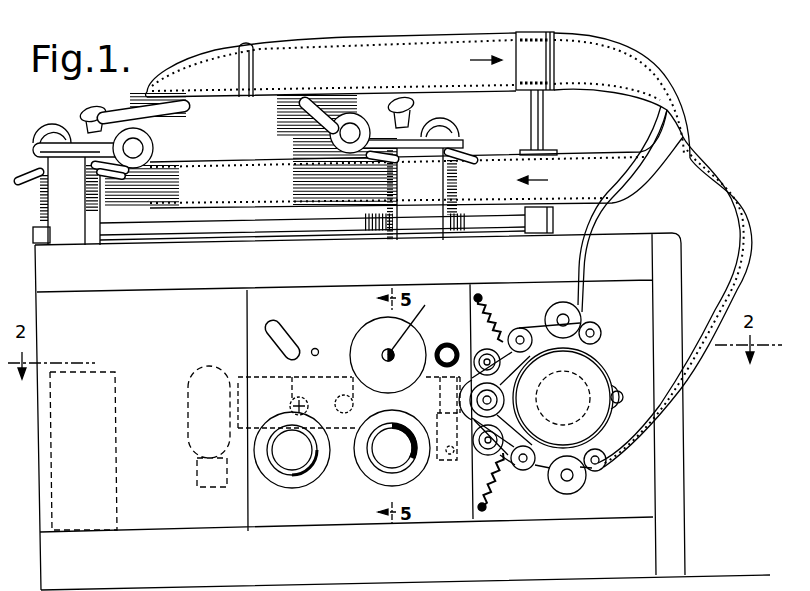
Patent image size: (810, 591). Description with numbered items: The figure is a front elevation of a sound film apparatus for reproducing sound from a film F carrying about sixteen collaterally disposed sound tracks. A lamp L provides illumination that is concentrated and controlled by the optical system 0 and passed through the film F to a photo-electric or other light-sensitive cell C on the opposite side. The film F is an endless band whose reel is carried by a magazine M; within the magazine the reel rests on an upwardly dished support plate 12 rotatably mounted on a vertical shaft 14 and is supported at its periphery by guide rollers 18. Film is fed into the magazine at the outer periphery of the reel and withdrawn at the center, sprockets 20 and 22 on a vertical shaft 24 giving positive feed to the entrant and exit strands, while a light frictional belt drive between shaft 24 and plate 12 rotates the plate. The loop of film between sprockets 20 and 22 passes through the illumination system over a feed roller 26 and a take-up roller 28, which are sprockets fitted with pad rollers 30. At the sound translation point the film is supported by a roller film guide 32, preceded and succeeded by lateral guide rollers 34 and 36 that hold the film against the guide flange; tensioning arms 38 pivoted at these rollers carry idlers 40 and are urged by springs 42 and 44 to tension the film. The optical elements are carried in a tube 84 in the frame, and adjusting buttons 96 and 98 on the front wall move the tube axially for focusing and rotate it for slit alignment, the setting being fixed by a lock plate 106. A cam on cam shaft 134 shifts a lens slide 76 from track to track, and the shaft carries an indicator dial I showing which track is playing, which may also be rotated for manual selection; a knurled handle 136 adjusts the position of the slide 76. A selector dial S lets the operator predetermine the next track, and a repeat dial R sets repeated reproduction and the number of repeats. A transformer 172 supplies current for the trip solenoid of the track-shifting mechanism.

The support plate 12 is at (266, 224).
The vertical shaft 14 is at (254, 49).
The guide rollers 18 is at (62, 121).
The sprocket 20 is at (556, 152).
The sprocket 22 is at (544, 33).
The vertical shaft 24 is at (537, 120).
The feed roller 26 is at (578, 312).
The take-up roller 28 is at (565, 495).
The pad rollers 30 is at (602, 333).
The roller film guide 32 is at (500, 393).
The lateral guide roller 34 is at (480, 347).
The lateral guide roller 36 is at (498, 447).
The tensioning arms 38 is at (496, 347).
The idlers 40 is at (523, 328).
The spring 42 is at (483, 297).
The spring 44 is at (473, 492).
The lens slide 76 is at (433, 490).
The tube 84 is at (263, 405).
The adjusting button 96 is at (289, 405).
The adjusting button 98 is at (354, 404).
The lock plate 106 is at (303, 377).
The cam shaft 134 is at (405, 355).
The knurled handle 136 is at (439, 368).
The transformer 172 is at (102, 432).
The film F is at (681, 144).
The magazine M is at (215, 228).
The light-sensitive cell C is at (600, 385).
The lamp L is at (190, 422).
The repeat dial R is at (292, 463).
The selector dial S is at (383, 460).
The indicator dial I is at (411, 324).
The optical system 0 is at (454, 503).